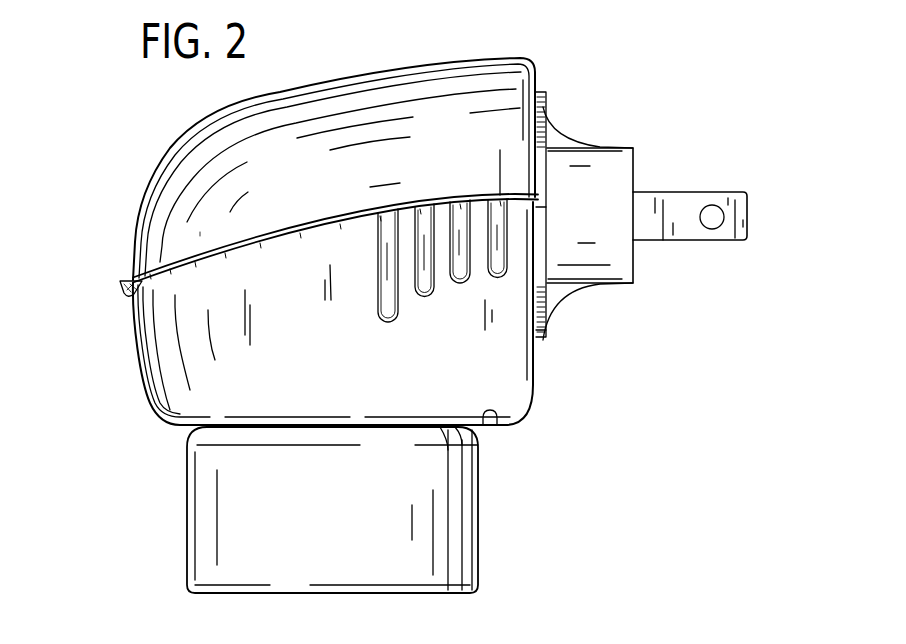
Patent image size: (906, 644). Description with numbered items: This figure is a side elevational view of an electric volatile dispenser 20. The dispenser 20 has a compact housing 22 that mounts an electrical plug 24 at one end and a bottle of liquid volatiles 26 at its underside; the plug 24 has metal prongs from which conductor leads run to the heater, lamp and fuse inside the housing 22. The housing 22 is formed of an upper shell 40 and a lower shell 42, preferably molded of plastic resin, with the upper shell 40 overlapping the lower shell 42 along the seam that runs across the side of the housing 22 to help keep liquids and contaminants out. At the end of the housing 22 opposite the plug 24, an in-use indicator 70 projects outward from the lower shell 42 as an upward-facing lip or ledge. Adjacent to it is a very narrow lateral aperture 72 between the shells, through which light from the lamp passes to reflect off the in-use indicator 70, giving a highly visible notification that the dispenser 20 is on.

The electric volatile dispenser 20 is at (596, 55).
The housing 22 is at (137, 210).
The electrical plug 24 is at (590, 289).
The bottle of liquid volatiles 26 is at (209, 523).
The upper shell 40 is at (301, 207).
The lower shell 42 is at (285, 387).
The in-use indicator 70 is at (128, 291).
The aperture 72 is at (133, 279).